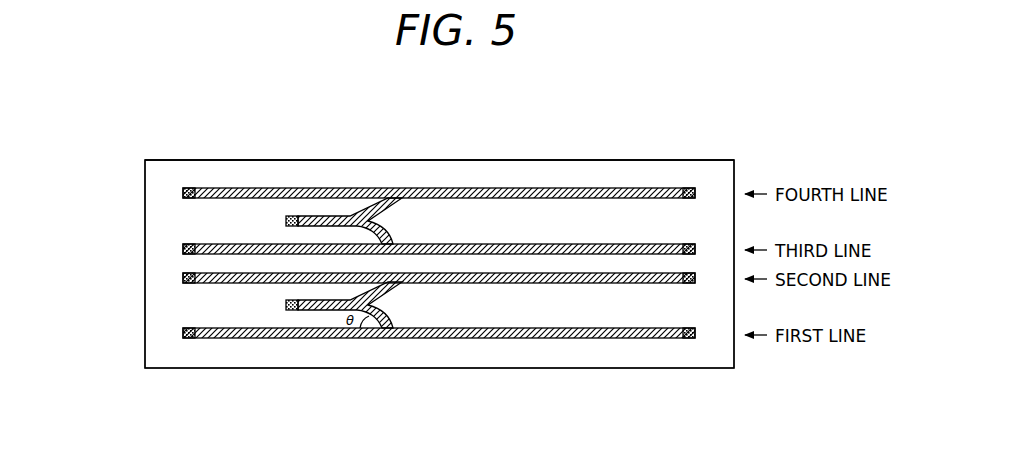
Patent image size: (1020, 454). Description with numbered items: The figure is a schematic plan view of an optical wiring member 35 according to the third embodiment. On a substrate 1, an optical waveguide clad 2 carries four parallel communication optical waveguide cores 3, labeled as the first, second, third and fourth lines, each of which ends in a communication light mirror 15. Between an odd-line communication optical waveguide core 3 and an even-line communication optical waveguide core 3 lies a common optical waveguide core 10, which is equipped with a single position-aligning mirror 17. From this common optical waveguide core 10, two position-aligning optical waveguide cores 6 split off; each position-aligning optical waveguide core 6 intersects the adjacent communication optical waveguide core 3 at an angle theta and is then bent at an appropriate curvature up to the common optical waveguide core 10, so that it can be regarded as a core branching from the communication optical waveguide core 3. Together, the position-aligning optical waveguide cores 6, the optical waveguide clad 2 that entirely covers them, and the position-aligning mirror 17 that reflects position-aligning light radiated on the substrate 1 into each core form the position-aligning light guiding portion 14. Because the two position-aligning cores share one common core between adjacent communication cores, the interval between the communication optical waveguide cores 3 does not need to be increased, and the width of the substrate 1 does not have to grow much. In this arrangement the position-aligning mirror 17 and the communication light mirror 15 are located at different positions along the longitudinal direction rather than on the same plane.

The substrate 1 is at (672, 352).
The optical waveguide clad 2 is at (593, 160).
The communication optical waveguide core 3 is at (530, 188).
The position-aligning optical waveguide core 6 is at (370, 204).
The common optical waveguide core 10 is at (330, 215).
The position-aligning light guiding portion 14 is at (406, 215).
The communication light mirror 15 is at (186, 188).
The position-aligning mirror 17 is at (290, 215).
The optical wiring member 35 is at (133, 133).